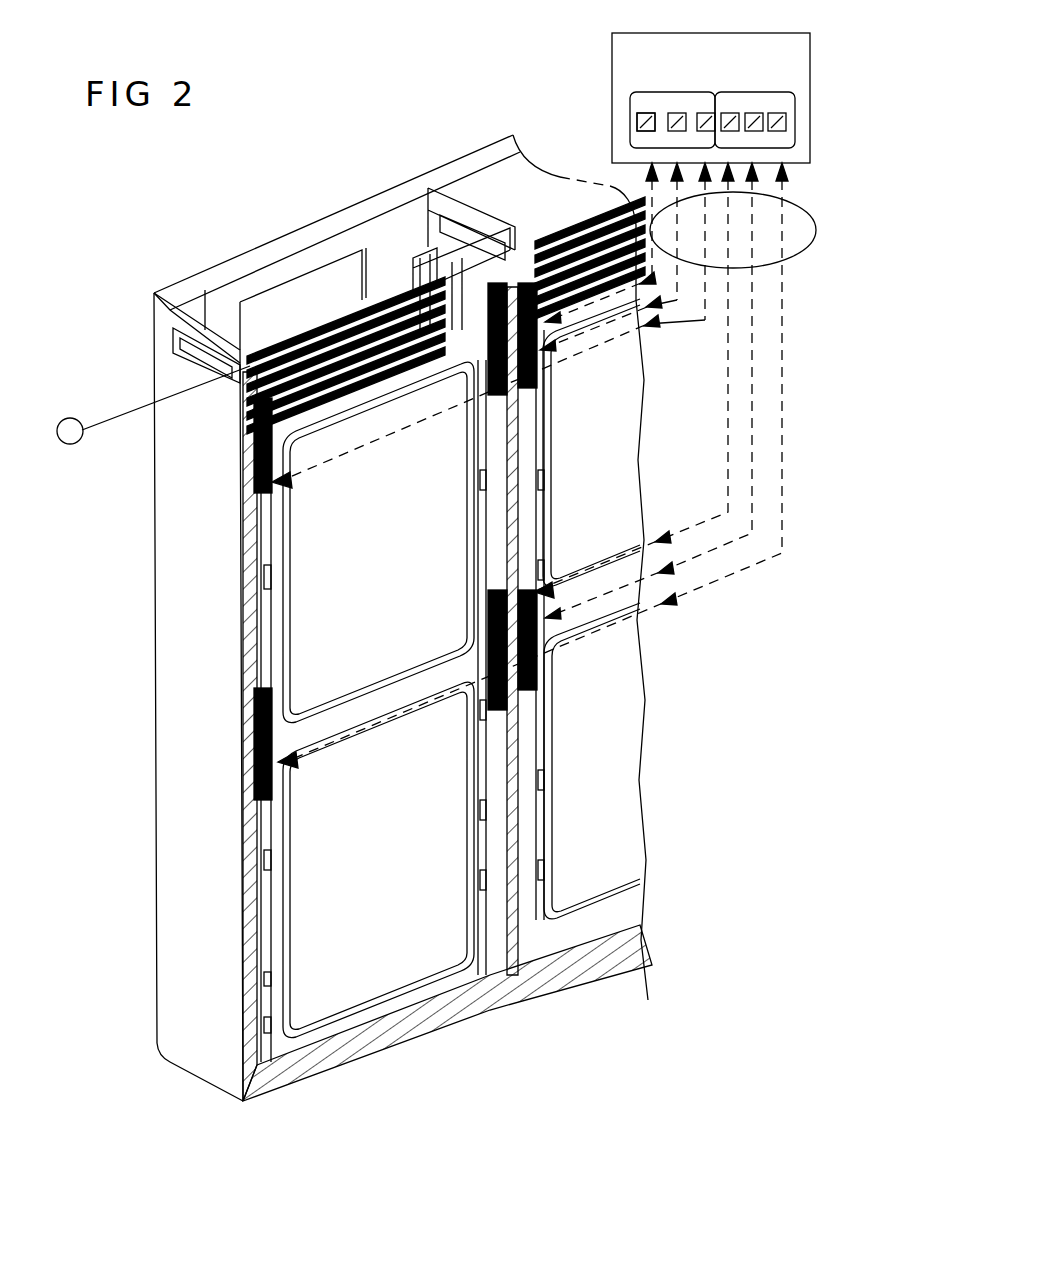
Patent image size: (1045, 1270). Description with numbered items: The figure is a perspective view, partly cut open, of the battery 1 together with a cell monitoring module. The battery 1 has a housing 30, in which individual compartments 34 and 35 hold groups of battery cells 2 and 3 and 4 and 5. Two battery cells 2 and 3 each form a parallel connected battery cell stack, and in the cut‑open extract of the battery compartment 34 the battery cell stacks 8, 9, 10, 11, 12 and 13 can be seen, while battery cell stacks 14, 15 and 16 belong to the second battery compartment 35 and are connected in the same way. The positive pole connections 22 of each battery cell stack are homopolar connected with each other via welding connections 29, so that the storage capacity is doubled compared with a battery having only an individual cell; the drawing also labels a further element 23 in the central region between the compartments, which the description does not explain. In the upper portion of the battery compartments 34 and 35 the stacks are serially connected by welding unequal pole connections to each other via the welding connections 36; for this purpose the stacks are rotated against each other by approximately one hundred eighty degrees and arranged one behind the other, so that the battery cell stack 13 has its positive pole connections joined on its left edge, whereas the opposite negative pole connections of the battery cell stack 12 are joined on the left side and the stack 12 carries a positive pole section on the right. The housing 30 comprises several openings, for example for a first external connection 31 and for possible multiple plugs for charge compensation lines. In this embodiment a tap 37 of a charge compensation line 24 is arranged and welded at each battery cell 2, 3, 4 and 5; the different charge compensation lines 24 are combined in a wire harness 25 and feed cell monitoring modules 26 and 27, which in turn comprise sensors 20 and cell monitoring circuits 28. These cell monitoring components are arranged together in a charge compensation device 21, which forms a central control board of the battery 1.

The battery 1 is at (240, 222).
The battery cell 2 is at (381, 572).
The battery cell 3 is at (381, 857).
The battery cell 4 is at (600, 506).
The battery cell 5 is at (600, 786).
The battery cell stack 8 is at (262, 352).
The battery cell stack 9 is at (284, 358).
The battery cell stack 10 is at (305, 362).
The battery cell stack 11 is at (330, 366).
The battery cell stack 12 is at (352, 370).
The battery cell stack 13 is at (378, 374).
The battery cell stack 14 is at (556, 238).
The battery cell stack 15 is at (587, 236).
The battery cell stack 16 is at (614, 230).
The sensor 20 is at (790, 122).
The charge compensation device 21 is at (805, 52).
The positive pole connection 22 is at (535, 455).
The guide rail 23 is at (477, 483).
The charge compensation line 24 is at (730, 363).
The wire harness 25 is at (816, 225).
The cell monitoring module 26 is at (670, 99).
The cell monitoring module 27 is at (757, 99).
The cell monitoring circuit 28 is at (637, 124).
The welding connection 29 is at (240, 747).
The housing 30 is at (162, 550).
The first external connection 31 is at (68, 447).
The battery compartment 34 is at (337, 237).
The battery compartment 35 is at (473, 187).
The welding connection 36 is at (243, 450).
The tap 37 is at (290, 477).